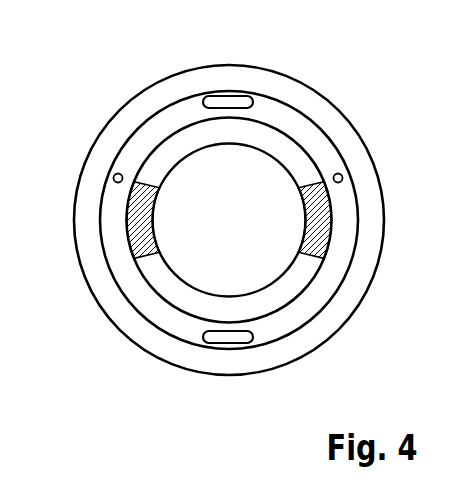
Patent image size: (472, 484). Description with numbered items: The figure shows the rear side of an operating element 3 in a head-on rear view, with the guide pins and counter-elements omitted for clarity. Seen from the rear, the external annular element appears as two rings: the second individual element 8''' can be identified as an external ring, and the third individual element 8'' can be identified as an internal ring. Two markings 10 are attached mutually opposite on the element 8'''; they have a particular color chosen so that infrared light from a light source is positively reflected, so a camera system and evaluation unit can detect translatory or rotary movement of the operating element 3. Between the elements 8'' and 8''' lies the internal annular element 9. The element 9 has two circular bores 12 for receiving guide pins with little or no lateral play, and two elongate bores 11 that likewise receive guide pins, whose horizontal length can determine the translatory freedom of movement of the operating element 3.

The operating element 3 is at (121, 70).
The third individual element of the external annular element 8'' is at (306, 110).
The internal annular element 9 is at (277, 118).
The second individual element of the external annular element 8''' is at (290, 134).
The markings 10 is at (127, 200).
The elongate bores 11 is at (227, 100).
The circular bores 12 is at (113, 178).